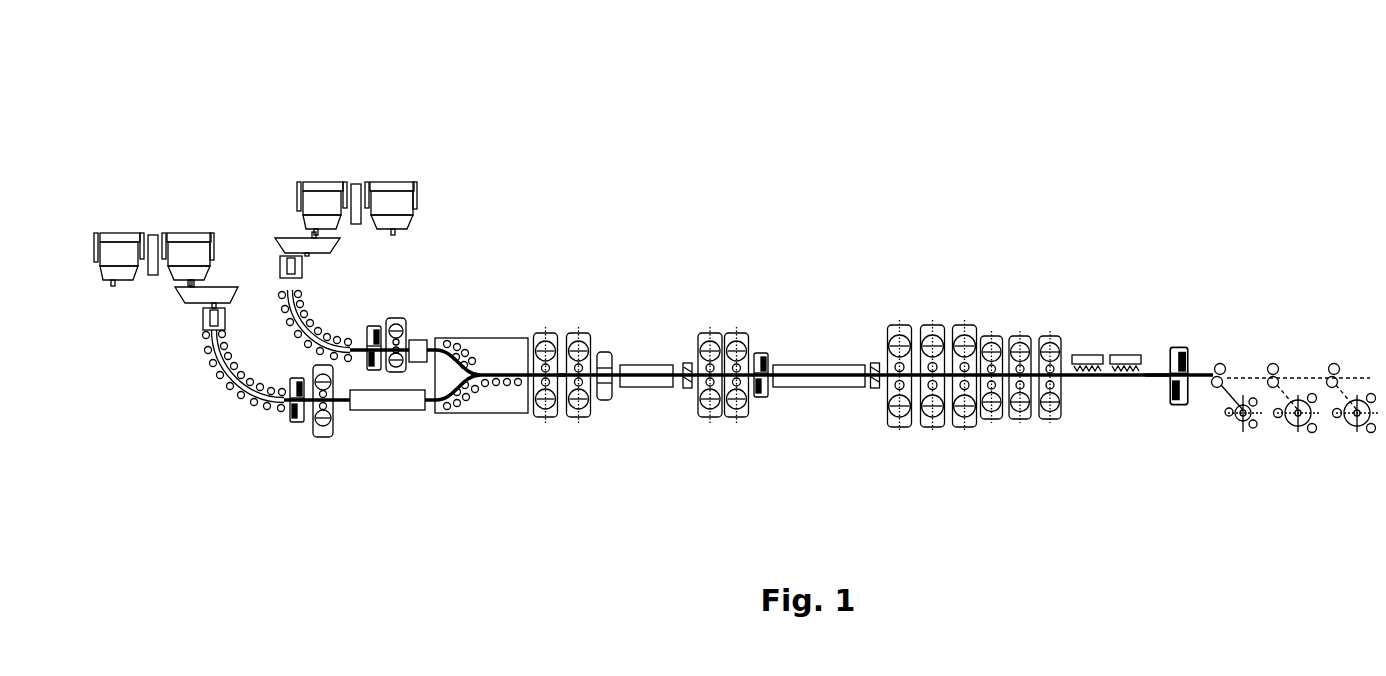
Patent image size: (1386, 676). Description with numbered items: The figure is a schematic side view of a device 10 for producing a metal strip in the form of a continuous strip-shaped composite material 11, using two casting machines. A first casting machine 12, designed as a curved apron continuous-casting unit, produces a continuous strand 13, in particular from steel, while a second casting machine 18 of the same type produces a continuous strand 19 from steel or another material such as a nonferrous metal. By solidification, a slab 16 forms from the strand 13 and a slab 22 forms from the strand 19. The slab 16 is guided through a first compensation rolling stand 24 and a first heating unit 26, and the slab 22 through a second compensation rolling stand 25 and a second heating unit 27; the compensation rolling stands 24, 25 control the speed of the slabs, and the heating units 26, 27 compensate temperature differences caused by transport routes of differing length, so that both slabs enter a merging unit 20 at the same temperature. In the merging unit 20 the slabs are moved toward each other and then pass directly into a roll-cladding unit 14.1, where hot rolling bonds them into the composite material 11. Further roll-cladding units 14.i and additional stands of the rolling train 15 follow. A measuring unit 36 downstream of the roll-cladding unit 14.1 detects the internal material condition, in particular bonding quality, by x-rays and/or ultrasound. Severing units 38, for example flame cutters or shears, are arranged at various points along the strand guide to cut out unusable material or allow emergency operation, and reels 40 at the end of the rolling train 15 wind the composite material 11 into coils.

The device 10 is at (1220, 122).
The continuous strip-shaped composite material 11 is at (1152, 372).
The first casting machine 12 is at (150, 226).
The continuous strand 13 is at (213, 368).
The roll-cladding unit 14.1 is at (547, 333).
The further roll-cladding unit 14.i is at (588, 333).
The rolling train 15 is at (980, 300).
The slab 16 is at (317, 466).
The second casting machine 18 is at (358, 176).
The continuous strand 19 is at (292, 224).
The merging unit 20 is at (498, 338).
The slab 22 is at (351, 346).
The first compensation rolling stand 24 is at (322, 437).
The second compensation rolling stand 25 is at (397, 318).
The first heating unit 26 is at (398, 411).
The second heating unit 27 is at (433, 224).
The measuring unit 36 is at (679, 243).
The severing unit 38 is at (374, 325).
The reel 40 is at (1237, 350).